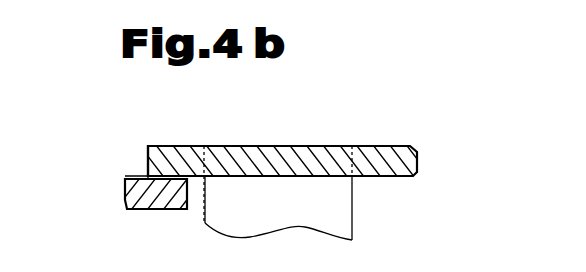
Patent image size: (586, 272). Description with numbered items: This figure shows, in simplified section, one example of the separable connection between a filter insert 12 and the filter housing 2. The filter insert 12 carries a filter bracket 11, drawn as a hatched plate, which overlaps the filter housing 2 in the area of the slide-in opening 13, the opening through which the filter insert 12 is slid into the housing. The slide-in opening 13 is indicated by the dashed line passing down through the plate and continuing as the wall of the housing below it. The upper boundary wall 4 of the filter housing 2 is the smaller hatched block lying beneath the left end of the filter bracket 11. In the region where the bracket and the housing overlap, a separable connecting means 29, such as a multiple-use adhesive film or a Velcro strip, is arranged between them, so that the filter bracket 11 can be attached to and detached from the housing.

The filter housing 2 is at (118, 221).
The upper boundary wall 4 is at (150, 201).
The filter bracket 11 is at (165, 152).
The filter insert 12 is at (306, 135).
The slide-in opening 13 is at (189, 201).
The separable connecting means 29 is at (147, 178).